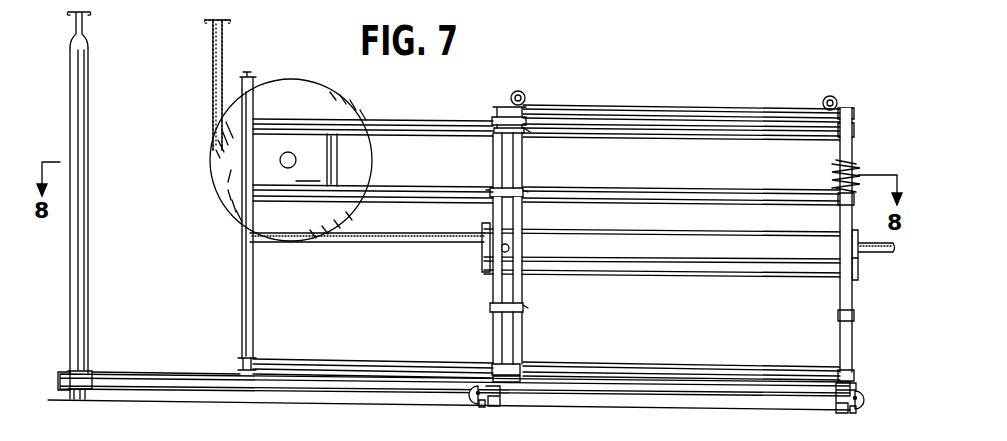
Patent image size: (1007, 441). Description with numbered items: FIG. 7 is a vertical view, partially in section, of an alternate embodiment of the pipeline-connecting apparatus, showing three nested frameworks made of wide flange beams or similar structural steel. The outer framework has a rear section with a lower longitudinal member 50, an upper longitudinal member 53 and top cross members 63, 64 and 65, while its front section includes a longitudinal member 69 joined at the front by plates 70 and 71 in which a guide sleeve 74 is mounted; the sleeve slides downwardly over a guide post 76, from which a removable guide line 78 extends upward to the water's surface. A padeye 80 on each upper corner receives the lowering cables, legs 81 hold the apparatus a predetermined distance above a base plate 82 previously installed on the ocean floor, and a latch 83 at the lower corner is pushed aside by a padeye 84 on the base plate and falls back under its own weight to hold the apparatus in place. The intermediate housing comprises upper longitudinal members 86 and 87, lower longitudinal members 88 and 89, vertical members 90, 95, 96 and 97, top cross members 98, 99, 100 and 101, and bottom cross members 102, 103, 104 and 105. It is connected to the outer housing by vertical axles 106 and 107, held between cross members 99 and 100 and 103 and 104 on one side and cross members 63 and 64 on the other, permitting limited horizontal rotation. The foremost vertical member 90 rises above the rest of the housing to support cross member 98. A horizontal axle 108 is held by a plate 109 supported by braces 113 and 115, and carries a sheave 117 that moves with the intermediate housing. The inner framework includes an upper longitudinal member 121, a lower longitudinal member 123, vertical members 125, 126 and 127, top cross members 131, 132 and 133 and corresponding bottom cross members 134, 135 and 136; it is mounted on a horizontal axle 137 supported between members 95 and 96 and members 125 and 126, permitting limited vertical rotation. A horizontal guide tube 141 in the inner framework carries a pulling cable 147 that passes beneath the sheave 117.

The lower longitudinal member 50 is at (858, 385).
The upper longitudinal member 53 is at (642, 101).
The top cross member 63 is at (492, 112).
The top cross member 64 is at (526, 108).
The top cross member 65 is at (853, 109).
The longitudinal member 69 is at (140, 375).
The plate 70 is at (90, 372).
The plate 71 is at (90, 392).
The guide sleeve 74 is at (64, 371).
The guide post 76 is at (89, 255).
The guide line 78 is at (86, 22).
The padeye 80 is at (518, 91).
The leg 81 is at (497, 407).
The base plate 82 is at (282, 401).
The latch 83 is at (472, 398).
The padeye 84 is at (482, 408).
The upper longitudinal member 86 is at (386, 119).
The upper longitudinal member 87 is at (630, 136).
The lower longitudinal member 88 is at (310, 360).
The lower longitudinal member 89 is at (648, 357).
The right side vertical member 90 is at (252, 297).
The left side vertical member 95 is at (493, 170).
The left side vertical member 96 is at (522, 170).
The left side vertical member 97 is at (853, 161).
The top cross member 98 is at (253, 74).
The top cross member 99 is at (492, 131).
The top cross member 100 is at (525, 131).
The top cross member 101 is at (855, 131).
The bottom cross member 102 is at (240, 364).
The bottom cross member 103 is at (492, 368).
The bottom cross member 104 is at (520, 368).
The bottom cross member 105 is at (854, 373).
The vertical axle 106 is at (504, 105).
The vertical axle 107 is at (512, 383).
The horizontal axle 108 is at (294, 155).
The plate 109 is at (297, 164).
The brace 113 is at (421, 180).
The brace 115 is at (338, 158).
The sheave 117 is at (326, 82).
The upper longitudinal member 121 is at (650, 180).
The lower longitudinal member 123 is at (660, 306).
The right side vertical member 125 is at (493, 284).
The right side vertical member 126 is at (522, 284).
The right side vertical member 127 is at (858, 292).
The top cross member 131 is at (491, 194).
The top cross member 132 is at (524, 194).
The top cross member 133 is at (838, 200).
The bottom cross member 134 is at (490, 307).
The bottom cross member 135 is at (524, 309).
The bottom cross member 136 is at (855, 314).
The horizontal axle 137 is at (509, 247).
The horizontal guide tube 141 is at (656, 230).
The pulling cable 147 is at (212, 88).